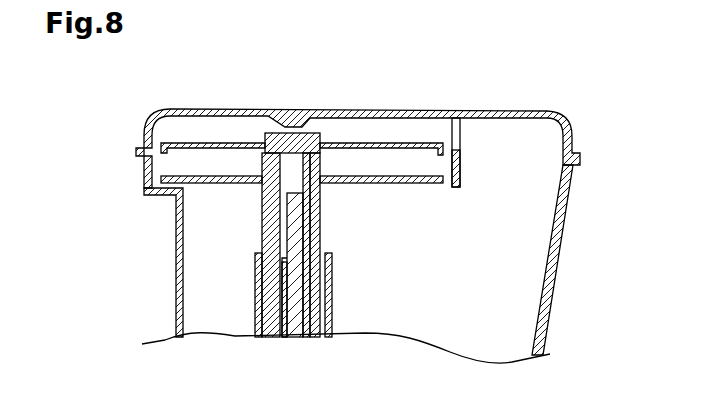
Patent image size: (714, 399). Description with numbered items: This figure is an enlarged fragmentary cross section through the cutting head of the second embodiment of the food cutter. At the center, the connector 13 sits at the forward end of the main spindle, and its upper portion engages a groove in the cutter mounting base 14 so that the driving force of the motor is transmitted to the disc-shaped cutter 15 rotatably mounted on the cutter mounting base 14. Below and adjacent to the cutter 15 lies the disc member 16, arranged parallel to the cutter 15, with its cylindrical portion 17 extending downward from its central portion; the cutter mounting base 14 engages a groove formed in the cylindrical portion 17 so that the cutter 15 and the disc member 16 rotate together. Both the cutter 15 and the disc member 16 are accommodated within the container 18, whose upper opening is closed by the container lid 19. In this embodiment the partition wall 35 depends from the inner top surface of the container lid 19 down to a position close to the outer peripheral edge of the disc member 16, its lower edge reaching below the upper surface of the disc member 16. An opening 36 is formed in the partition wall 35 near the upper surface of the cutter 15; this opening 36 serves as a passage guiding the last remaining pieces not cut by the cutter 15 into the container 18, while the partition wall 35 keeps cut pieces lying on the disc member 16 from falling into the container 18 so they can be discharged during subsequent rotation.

The connector 13 is at (292, 264).
The cutter mounting base 14 is at (290, 135).
The disc-shaped cutter 15 is at (353, 146).
The disc member 16 is at (410, 185).
The cylindrical portion 17 is at (320, 223).
The container 18 is at (175, 302).
The container lid 19 is at (252, 113).
The partition wall 35 is at (460, 168).
The opening 36 is at (457, 137).